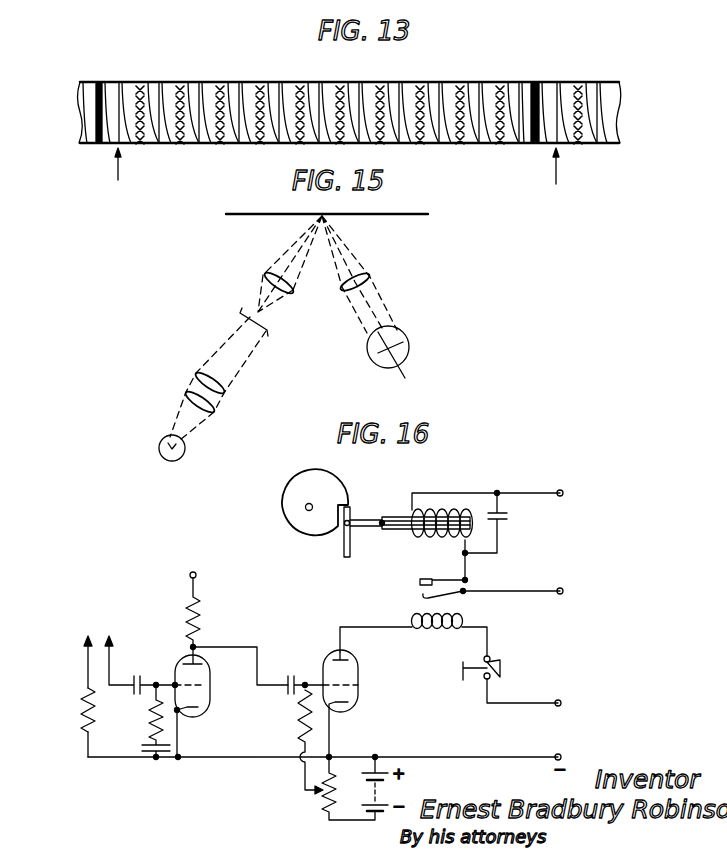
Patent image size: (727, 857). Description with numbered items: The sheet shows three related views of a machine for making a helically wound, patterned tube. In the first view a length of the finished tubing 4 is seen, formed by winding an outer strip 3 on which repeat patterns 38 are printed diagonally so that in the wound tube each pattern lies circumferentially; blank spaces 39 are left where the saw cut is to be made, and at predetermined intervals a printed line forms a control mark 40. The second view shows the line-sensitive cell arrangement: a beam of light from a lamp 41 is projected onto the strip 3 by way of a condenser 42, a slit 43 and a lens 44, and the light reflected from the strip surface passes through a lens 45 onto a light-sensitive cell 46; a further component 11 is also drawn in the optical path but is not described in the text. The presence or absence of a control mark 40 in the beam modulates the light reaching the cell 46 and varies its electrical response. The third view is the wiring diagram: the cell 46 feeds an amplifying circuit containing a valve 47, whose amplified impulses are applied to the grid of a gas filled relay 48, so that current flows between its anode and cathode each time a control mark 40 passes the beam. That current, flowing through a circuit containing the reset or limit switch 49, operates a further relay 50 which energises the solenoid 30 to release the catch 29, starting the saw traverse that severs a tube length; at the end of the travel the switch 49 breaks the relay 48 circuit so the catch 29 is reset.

In FIG. 13, the tubing 4 is at (609, 115).
In FIG. 13, the repeat patterns 38 is at (174, 90).
In FIG. 13, the control mark 40 is at (102, 105).
In FIG. 13, the blank spaces 39 is at (112, 140).
In FIG. 15, the outer strip 3 is at (388, 215).
In FIG. 15, the lens 44 is at (263, 273).
In FIG. 15, the slit 43 is at (240, 314).
In FIG. 15, the lens 11 is at (195, 375).
In FIG. 15, the condenser 42 is at (183, 390).
In FIG. 15, the lamp 41 is at (185, 457).
In FIG. 15, the lens 45 is at (370, 277).
In FIG. 15, the light-sensitive cell 46 is at (410, 348).
In FIG. 16, the catch 29 is at (338, 557).
In FIG. 16, the solenoid 30 is at (427, 540).
In FIG. 16, the further relay 50 is at (417, 611).
In FIG. 16, the reset switch or limit switch 49 is at (503, 668).
In FIG. 16, the gas filled relay 48 is at (358, 685).
In FIG. 16, the valve 47 is at (207, 710).